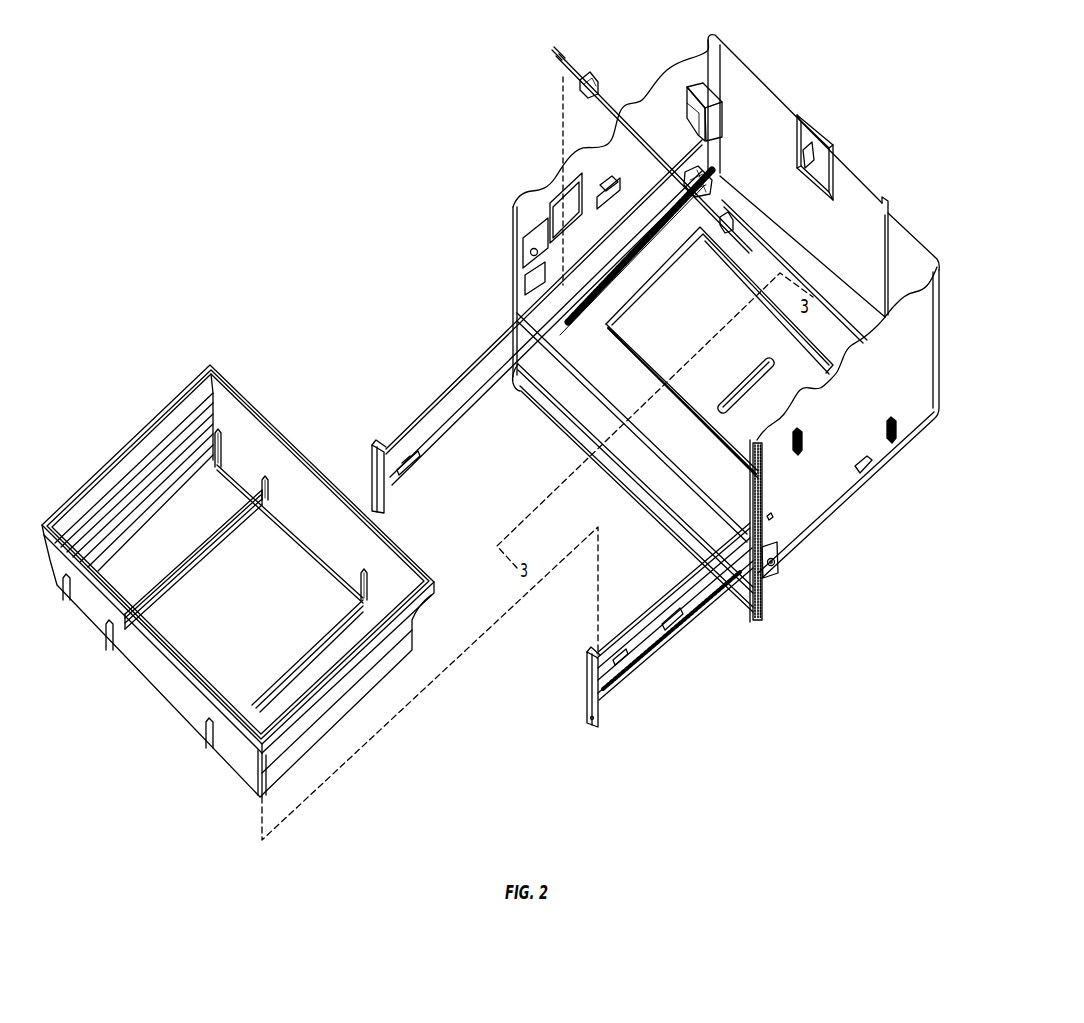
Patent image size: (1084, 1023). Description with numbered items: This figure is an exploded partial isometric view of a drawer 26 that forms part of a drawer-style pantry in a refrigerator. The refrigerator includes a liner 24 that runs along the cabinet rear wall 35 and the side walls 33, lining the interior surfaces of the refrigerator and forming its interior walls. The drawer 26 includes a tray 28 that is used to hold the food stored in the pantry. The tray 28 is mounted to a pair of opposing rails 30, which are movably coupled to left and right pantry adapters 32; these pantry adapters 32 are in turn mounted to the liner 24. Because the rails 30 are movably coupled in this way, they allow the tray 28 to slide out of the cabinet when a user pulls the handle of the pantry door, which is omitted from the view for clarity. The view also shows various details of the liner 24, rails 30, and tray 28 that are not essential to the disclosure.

The liner 24 is at (762, 110).
The drawer 26 is at (398, 186).
The tray 28 is at (243, 418).
The rails 30 is at (459, 376).
The pantry adapters 32 is at (678, 140).
The side walls 33 is at (697, 67).
The cabinet rear wall 35 is at (861, 229).